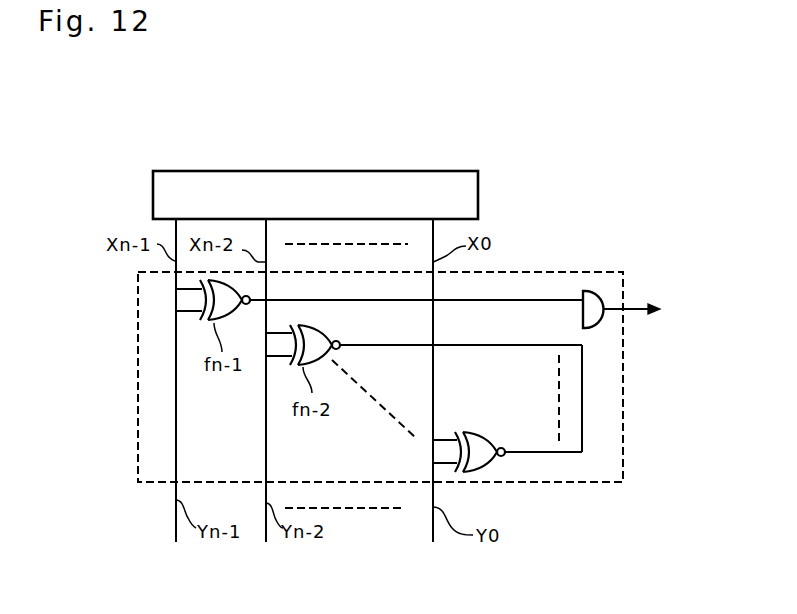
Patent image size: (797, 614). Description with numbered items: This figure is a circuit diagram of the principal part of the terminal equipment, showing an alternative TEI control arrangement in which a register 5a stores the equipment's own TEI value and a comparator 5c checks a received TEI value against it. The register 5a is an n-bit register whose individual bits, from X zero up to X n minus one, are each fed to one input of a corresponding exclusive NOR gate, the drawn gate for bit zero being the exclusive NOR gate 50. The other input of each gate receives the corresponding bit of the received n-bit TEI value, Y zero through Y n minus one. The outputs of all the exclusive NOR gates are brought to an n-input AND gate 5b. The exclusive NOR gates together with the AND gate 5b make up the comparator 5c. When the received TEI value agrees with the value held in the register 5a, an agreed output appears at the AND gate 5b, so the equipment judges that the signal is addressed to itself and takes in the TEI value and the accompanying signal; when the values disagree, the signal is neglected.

The register 5a is at (372, 171).
The AND gate 5b is at (598, 300).
The comparator 5c is at (623, 355).
The exclusive NOR gate 50 is at (487, 467).